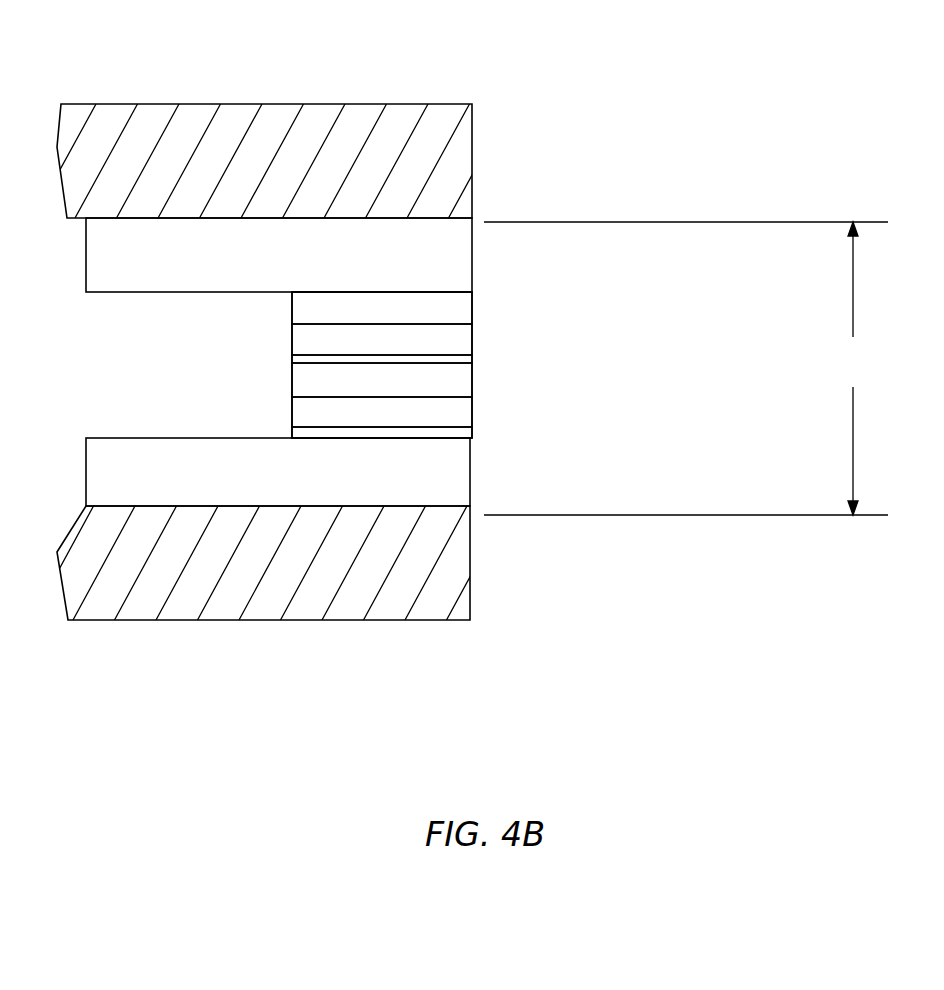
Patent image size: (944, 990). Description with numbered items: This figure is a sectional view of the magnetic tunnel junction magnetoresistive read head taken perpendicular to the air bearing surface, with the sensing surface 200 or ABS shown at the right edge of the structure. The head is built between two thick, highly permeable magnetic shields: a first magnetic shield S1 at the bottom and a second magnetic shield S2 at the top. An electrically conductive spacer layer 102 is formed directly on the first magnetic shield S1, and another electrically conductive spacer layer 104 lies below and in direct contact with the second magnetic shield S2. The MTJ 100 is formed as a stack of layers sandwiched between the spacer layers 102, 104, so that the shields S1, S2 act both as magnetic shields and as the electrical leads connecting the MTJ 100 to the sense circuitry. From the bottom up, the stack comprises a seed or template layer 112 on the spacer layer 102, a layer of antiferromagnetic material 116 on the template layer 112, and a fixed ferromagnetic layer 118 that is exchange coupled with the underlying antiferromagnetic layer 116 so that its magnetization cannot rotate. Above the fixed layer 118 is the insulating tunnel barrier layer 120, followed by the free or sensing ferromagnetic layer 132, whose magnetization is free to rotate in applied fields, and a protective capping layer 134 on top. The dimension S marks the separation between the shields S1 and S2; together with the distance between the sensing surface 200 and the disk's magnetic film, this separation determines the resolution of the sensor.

The MTJ 100 is at (496, 393).
The electrically conductive spacer layer 102 is at (458, 473).
The electrically conductive spacer layer 104 is at (452, 277).
The template layer 112 is at (466, 433).
The antiferromagnetic layer 116 is at (462, 411).
The fixed ferromagnetic layer 118 is at (465, 385).
The insulating tunnel barrier layer 120 is at (467, 362).
The sensing ferromagnetic layer 132 is at (462, 349).
The capping layer 134 is at (462, 320).
The sensing surface 200 is at (333, 377).
The first magnetic shield S1 is at (275, 603).
The second magnetic shield S2 is at (352, 125).
The separation between the magnetic shield layers S is at (686, 368).